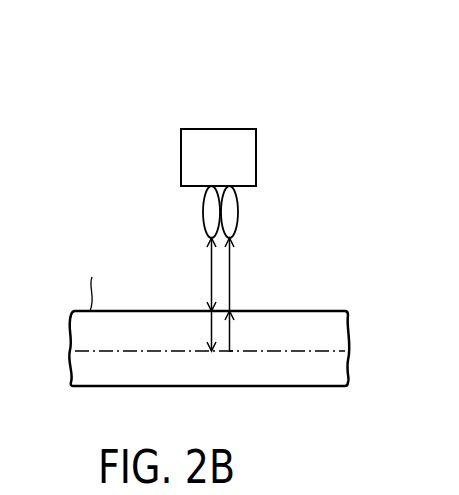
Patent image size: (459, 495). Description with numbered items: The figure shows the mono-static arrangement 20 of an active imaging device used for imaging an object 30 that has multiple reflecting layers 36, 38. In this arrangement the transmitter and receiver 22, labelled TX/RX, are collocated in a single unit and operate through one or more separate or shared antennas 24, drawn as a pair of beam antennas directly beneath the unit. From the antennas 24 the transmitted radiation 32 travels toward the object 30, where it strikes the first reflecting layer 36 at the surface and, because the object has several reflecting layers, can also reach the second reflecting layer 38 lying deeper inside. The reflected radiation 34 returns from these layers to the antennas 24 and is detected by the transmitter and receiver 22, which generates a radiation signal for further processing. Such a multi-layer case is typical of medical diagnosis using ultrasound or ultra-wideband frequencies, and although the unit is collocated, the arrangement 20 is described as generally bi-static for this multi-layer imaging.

The mono-static arrangement 20 is at (280, 118).
The transmitter and receiver 22 is at (256, 160).
The antenna 24 is at (238, 210).
The object 30 is at (333, 311).
The radiation 32 is at (211, 278).
The reflected radiation 34 is at (230, 275).
The reflecting layer 36 is at (96, 280).
The reflecting layer 38 is at (78, 348).